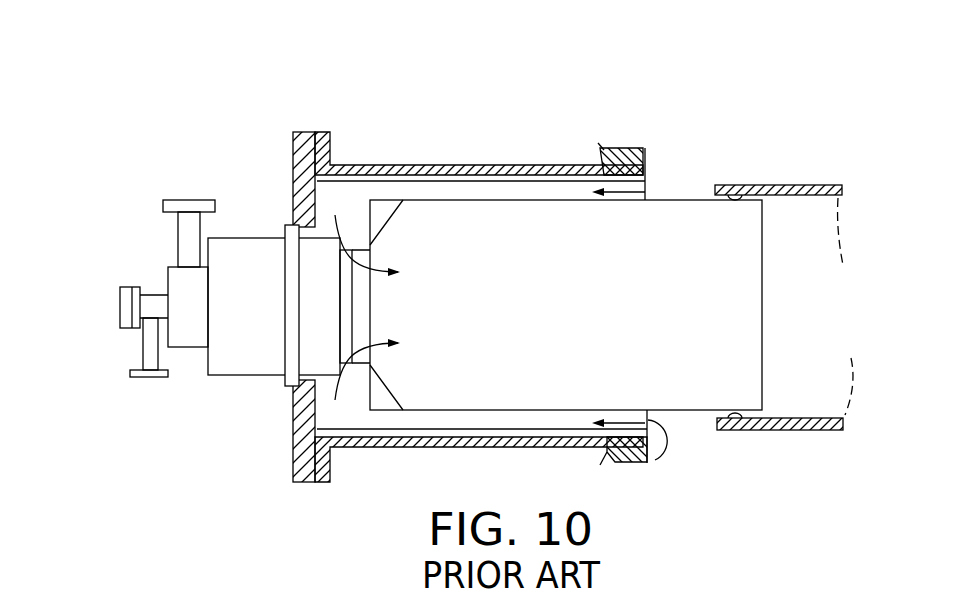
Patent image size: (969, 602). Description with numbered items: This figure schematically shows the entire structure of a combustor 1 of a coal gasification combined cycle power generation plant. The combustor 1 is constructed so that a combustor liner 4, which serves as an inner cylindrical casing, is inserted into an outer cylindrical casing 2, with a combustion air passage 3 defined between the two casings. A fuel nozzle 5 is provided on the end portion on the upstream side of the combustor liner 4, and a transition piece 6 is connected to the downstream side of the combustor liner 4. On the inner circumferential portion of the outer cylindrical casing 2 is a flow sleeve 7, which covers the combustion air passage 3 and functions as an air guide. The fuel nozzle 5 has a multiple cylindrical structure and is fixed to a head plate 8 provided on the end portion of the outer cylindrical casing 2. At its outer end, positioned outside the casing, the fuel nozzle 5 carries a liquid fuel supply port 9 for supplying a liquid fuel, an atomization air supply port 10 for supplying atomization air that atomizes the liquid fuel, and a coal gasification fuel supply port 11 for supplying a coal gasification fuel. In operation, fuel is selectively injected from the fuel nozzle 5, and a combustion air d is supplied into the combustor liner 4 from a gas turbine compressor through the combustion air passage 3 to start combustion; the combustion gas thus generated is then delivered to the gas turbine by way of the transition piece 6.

The combustor 1 is at (597, 127).
The outer cylindrical casing 2 is at (438, 163).
The combustion air passage 3 is at (545, 192).
The combustor liner 4 is at (683, 202).
The fuel nozzle 5 is at (245, 236).
The transition piece 6 is at (817, 432).
The flow sleeve 7 is at (482, 178).
The head plate 8 is at (293, 153).
The liquid fuel supply port 9 is at (118, 318).
The atomization air supply port 10 is at (133, 377).
The coal gasification fuel supply port 11 is at (177, 233).
The combustion air d is at (380, 268).